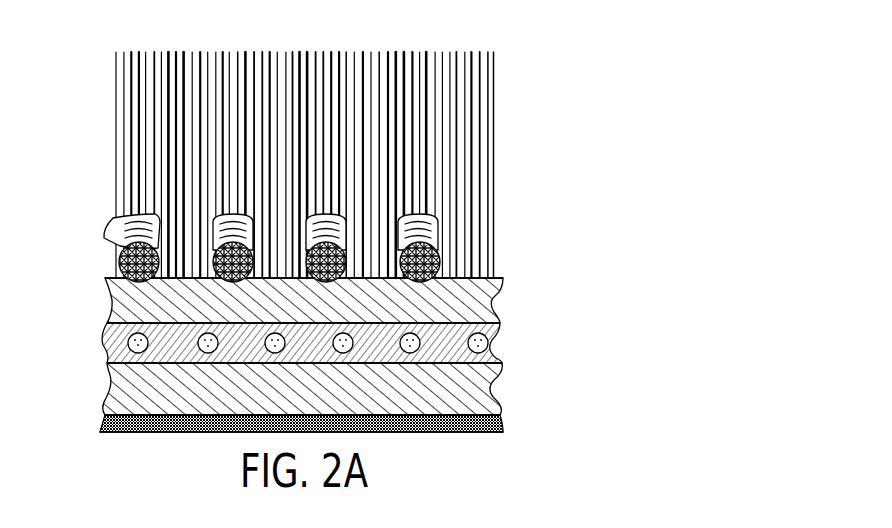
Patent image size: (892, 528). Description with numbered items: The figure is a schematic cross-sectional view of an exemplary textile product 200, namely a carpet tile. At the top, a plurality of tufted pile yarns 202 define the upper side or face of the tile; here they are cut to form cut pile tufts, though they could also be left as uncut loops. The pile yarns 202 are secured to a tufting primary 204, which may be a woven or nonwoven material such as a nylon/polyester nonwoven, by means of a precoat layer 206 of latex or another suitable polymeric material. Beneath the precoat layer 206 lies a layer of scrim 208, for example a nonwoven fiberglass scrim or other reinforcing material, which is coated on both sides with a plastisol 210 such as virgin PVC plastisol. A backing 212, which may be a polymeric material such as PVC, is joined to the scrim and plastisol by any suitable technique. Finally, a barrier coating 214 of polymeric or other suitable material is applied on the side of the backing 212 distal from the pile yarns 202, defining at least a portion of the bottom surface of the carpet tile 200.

The textile product 200 is at (593, 99).
The tufted pile yarns 202 is at (493, 166).
The tufting primary 204 is at (128, 259).
The precoat layer 206 is at (492, 303).
The scrim 208 is at (131, 345).
The plastisol 210 is at (491, 343).
The backing 212 is at (493, 391).
The barrier coating 214 is at (490, 429).